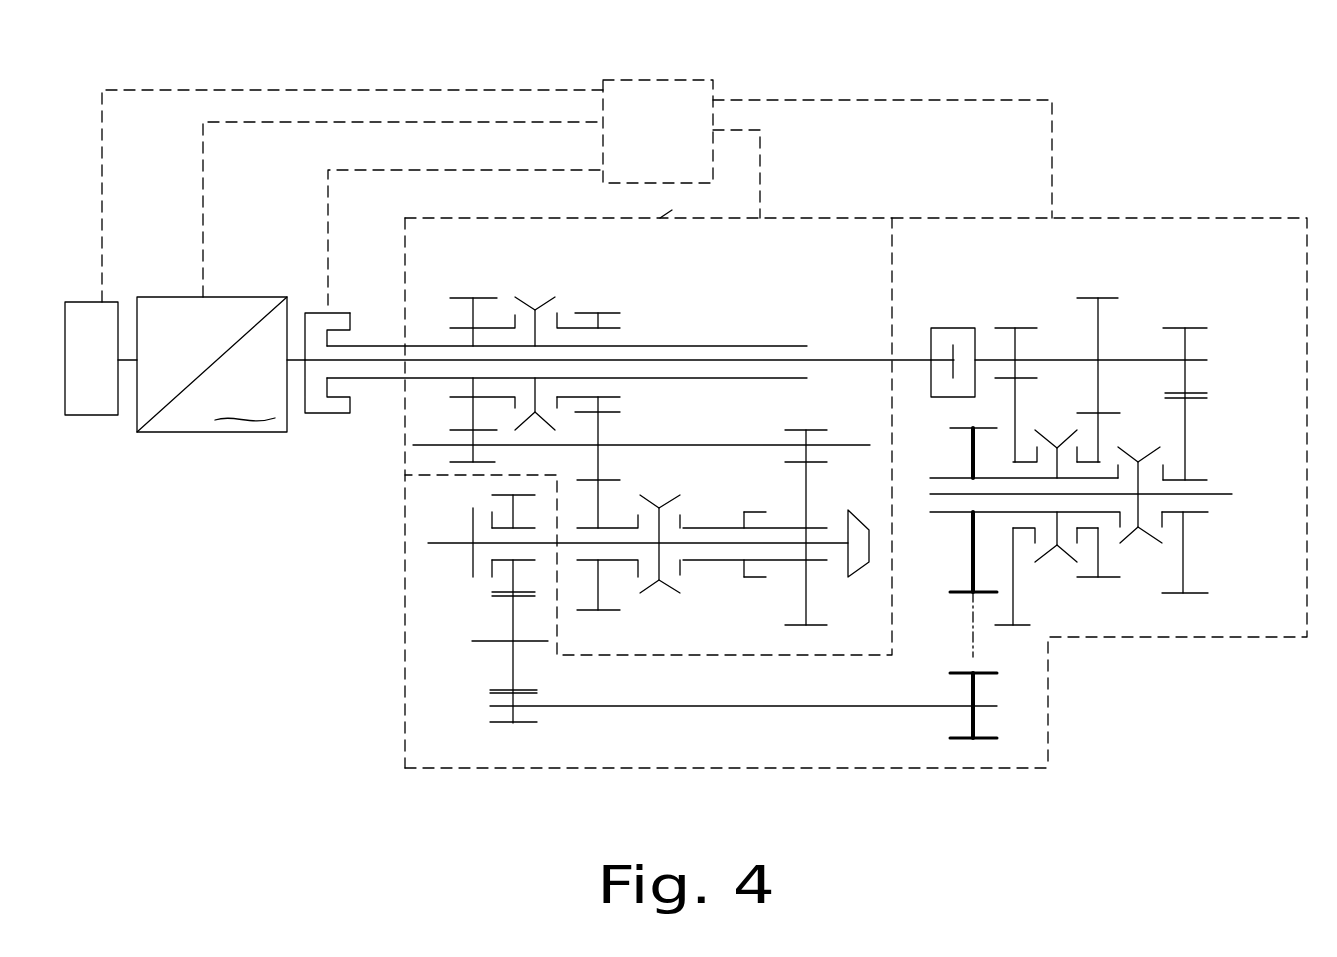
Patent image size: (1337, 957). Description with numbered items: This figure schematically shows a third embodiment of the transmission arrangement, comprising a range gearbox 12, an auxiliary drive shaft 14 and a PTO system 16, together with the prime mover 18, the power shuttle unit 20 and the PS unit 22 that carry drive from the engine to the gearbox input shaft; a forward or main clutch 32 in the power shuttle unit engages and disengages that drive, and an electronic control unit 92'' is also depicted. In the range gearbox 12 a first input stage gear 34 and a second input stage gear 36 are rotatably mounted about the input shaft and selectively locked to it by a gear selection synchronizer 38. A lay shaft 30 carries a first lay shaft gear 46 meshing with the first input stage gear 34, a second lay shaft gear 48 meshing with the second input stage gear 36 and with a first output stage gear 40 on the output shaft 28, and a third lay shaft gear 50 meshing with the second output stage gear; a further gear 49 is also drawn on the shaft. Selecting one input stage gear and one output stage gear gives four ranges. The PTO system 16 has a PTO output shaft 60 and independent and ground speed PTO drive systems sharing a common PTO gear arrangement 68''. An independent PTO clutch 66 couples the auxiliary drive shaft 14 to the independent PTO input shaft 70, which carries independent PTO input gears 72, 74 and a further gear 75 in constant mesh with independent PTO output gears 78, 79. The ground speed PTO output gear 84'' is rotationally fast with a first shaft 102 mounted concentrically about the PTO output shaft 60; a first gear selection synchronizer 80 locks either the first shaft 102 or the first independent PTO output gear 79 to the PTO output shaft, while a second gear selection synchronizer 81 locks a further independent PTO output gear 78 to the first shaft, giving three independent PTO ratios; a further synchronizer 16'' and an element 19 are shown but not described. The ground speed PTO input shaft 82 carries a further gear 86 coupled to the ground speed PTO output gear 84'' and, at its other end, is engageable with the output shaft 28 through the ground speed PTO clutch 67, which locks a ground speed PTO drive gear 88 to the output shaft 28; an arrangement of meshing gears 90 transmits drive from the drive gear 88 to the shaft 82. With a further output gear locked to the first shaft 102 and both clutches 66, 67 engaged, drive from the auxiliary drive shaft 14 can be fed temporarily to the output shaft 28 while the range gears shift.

The range gearbox 12 is at (405, 460).
The auxiliary drive shaft 14 is at (845, 358).
The PTO system 16 is at (1112, 726).
The synchronizer 16'' is at (1052, 427).
The prime mover 18 is at (112, 372).
The gear 19 is at (1182, 432).
The power shuttle unit 20 is at (205, 356).
The PS unit 22 is at (700, 346).
The output shaft 28 is at (715, 530).
The lay shaft 30 is at (685, 445).
The main clutch 32 is at (340, 422).
The first input stage gear 34 is at (465, 298).
The second input stage gear 36 is at (612, 313).
The gear selection synchronizer 38 is at (535, 310).
The first output stage gear 40 is at (535, 404).
The first lay shaft gear 46 is at (452, 437).
The second lay shaft gear 48 is at (600, 426).
The gear 49 is at (607, 585).
The third lay shaft gear 50 is at (828, 402).
The PTO output shaft 60 is at (1232, 494).
The independent PTO clutch 66 is at (942, 328).
The ground speed PTO clutch 67 is at (472, 566).
The PTO gear arrangement 68'' is at (1246, 709).
The independent PTO input shaft 70 is at (1207, 358).
The independent PTO input gear 72 is at (997, 328).
The independent PTO input gear 74 is at (1115, 265).
The gear 75 is at (1190, 328).
The independent PTO output gear 78 is at (1100, 432).
The first independent PTO output gear 79 is at (1098, 552).
The first PTO gear selection synchronizer 80 is at (1138, 547).
The second gear selection synchronizer 81 is at (1043, 557).
The ground speed PTO input shaft 82 is at (750, 706).
The ground speed PTO output gear 84'' is at (956, 584).
The further gear 86 is at (993, 742).
The ground speed PTO drive gear 88 is at (497, 492).
The arrangement of meshing gears 90 is at (513, 662).
The electronic control unit 92'' is at (738, 99).
The first shaft 102 is at (950, 478).